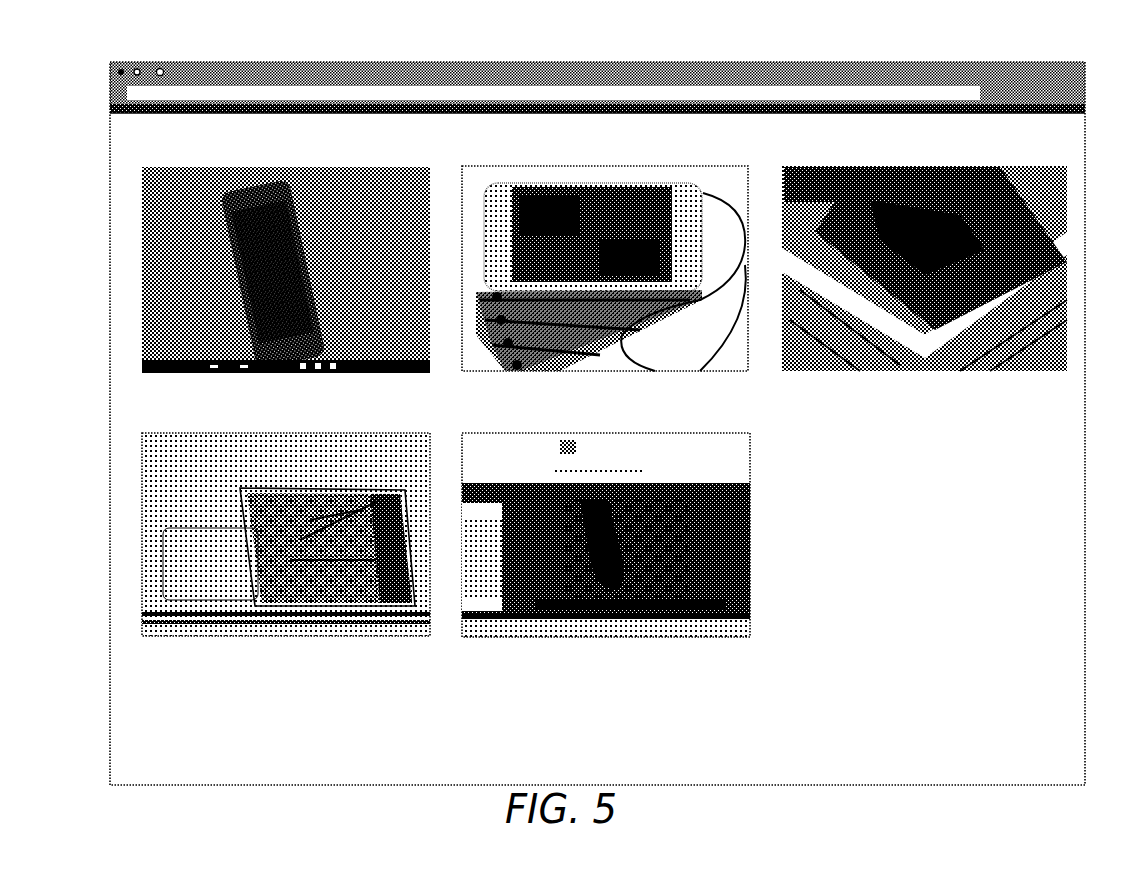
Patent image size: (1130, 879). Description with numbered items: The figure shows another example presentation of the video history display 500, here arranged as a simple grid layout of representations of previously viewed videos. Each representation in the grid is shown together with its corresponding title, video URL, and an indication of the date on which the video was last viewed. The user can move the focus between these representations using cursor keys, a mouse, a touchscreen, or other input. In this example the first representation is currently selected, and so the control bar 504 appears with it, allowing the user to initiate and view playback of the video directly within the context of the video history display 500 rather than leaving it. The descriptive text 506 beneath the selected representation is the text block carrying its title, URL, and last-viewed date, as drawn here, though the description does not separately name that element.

The video history display 500 is at (703, 60).
The control bar 504 is at (360, 368).
The history item descriptive text (title, URL, date) 506 is at (173, 403).